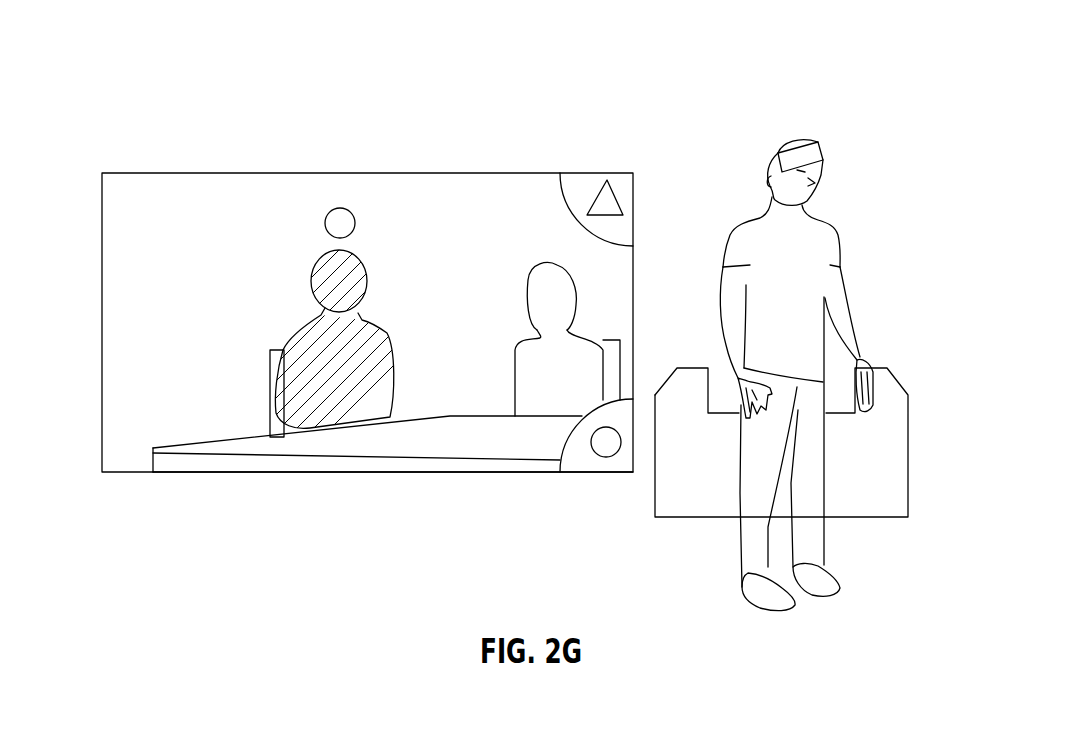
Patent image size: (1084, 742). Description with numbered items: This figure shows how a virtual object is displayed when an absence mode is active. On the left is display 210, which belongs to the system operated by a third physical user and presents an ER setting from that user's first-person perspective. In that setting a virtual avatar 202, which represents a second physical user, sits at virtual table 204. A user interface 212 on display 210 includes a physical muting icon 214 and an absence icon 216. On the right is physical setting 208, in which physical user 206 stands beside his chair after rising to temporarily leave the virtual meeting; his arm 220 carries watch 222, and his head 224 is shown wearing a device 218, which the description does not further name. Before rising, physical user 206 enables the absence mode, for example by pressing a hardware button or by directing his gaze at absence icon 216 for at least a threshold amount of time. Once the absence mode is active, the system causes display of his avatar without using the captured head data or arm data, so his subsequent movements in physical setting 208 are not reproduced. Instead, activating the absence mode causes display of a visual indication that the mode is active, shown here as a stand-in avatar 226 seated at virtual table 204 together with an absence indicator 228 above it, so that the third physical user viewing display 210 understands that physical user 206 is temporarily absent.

The virtual avatar 202 is at (557, 265).
The virtual table 204 is at (497, 452).
The physical user 206 is at (802, 360).
The physical setting 208 is at (807, 101).
The display 210 is at (102, 417).
The user interface 212 is at (132, 450).
The physical muting icon 214 is at (607, 180).
The absence icon 216 is at (606, 457).
The head-mounted device 218 is at (823, 152).
The arm 220 is at (852, 308).
The watch 222 is at (868, 363).
The head 224 is at (794, 140).
The stand-in avatar 226 is at (358, 252).
The absence indicator 228 is at (340, 208).